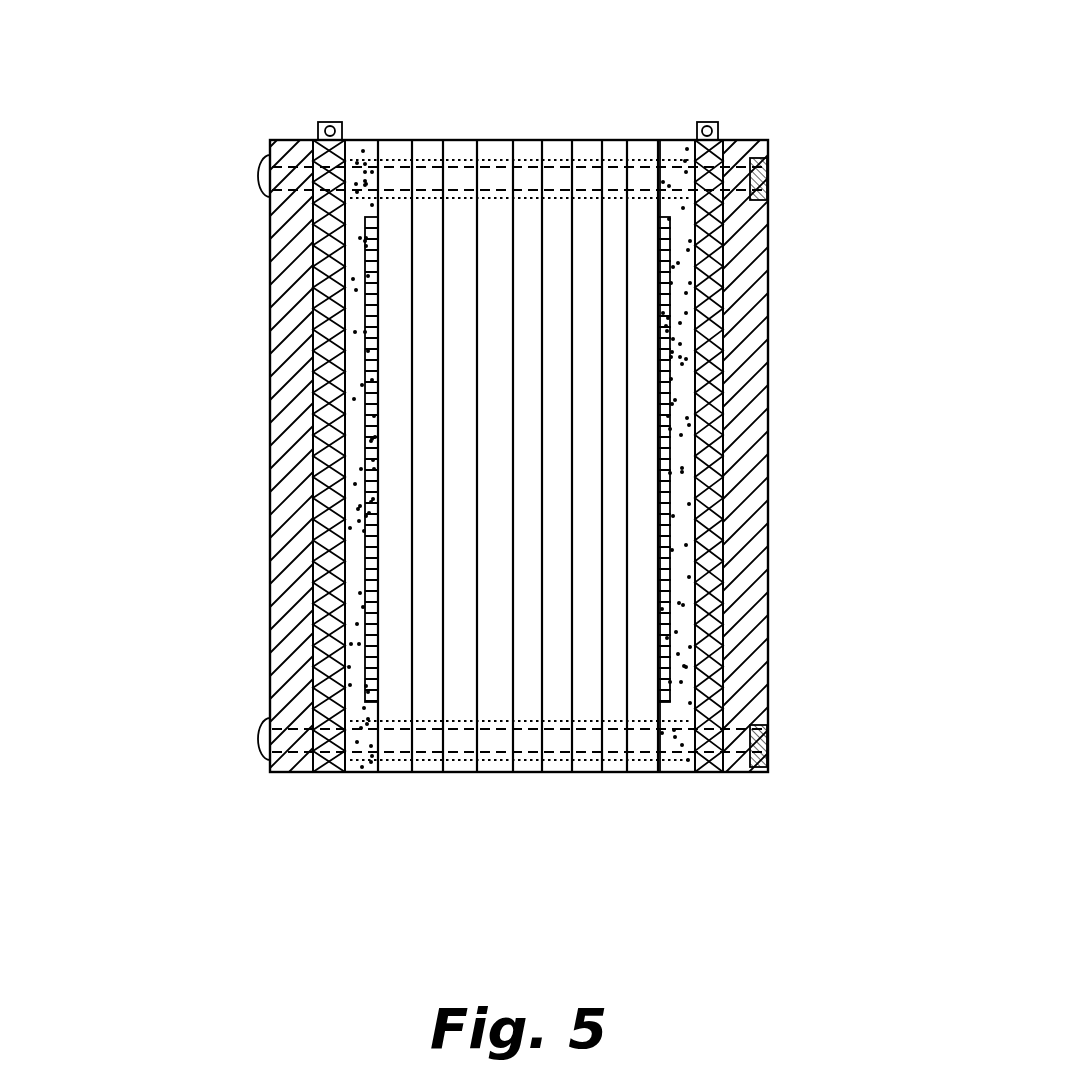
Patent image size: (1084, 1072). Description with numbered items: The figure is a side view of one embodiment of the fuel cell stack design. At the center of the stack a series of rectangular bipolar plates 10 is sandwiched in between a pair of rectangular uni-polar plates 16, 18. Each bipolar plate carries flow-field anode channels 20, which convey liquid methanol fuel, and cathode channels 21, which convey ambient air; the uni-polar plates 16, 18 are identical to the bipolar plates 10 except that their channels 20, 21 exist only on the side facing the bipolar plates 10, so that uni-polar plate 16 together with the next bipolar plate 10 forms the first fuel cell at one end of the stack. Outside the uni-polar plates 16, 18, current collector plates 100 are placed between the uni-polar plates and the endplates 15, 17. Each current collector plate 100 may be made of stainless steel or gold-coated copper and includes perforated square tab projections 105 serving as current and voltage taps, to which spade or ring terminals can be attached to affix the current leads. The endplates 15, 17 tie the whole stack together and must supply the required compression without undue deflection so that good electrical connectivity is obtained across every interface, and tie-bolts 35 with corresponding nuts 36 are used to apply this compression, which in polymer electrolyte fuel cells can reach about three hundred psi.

The bipolar plate 10 is at (660, 133).
The endplate 15 is at (270, 430).
The uni-polar plate 16 is at (370, 140).
The endplate 17 is at (770, 483).
The uni-polar plate 18 is at (672, 148).
The flow-field anode channel 20 is at (365, 610).
The cathode channel 21 is at (667, 589).
The tie-bolt 35 is at (258, 180).
The nut 36 is at (768, 175).
The current collector plate 100 is at (320, 772).
The perforated square tab projection 105 is at (334, 122).